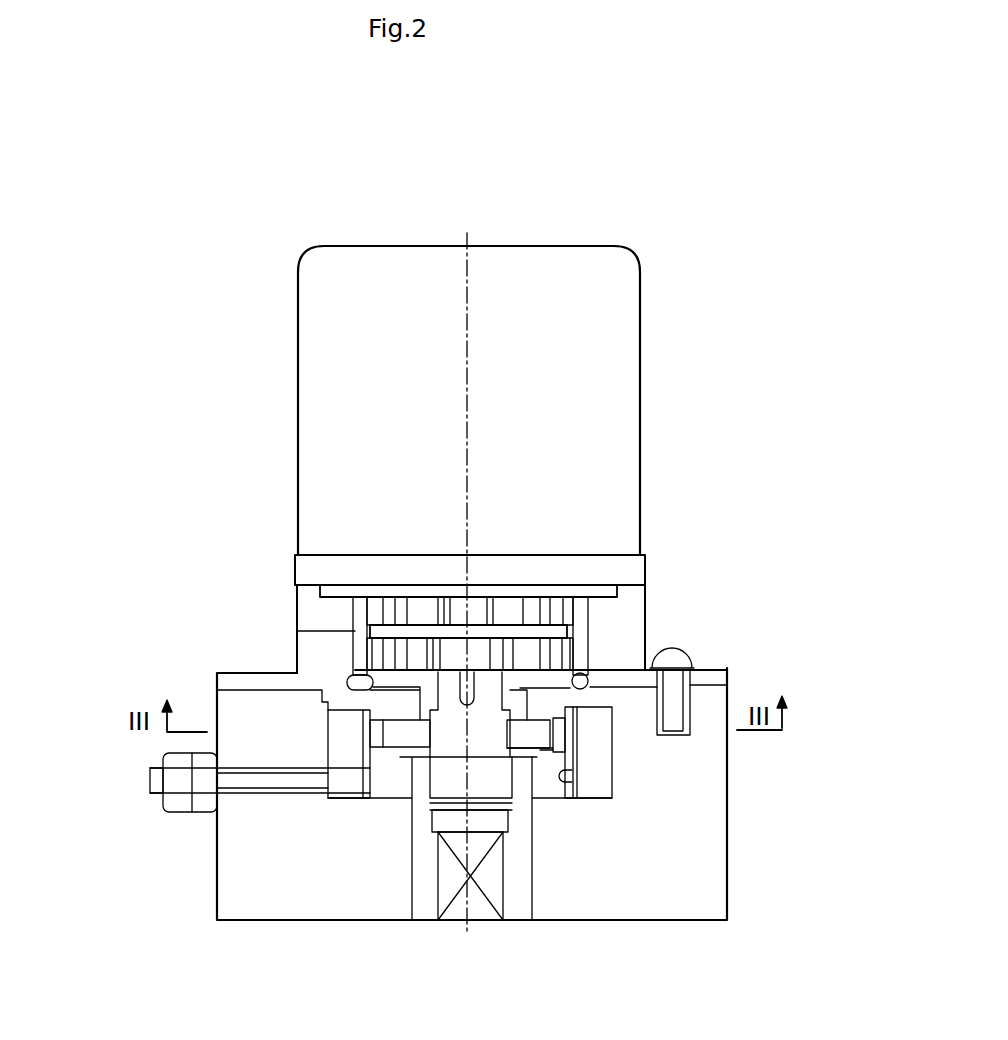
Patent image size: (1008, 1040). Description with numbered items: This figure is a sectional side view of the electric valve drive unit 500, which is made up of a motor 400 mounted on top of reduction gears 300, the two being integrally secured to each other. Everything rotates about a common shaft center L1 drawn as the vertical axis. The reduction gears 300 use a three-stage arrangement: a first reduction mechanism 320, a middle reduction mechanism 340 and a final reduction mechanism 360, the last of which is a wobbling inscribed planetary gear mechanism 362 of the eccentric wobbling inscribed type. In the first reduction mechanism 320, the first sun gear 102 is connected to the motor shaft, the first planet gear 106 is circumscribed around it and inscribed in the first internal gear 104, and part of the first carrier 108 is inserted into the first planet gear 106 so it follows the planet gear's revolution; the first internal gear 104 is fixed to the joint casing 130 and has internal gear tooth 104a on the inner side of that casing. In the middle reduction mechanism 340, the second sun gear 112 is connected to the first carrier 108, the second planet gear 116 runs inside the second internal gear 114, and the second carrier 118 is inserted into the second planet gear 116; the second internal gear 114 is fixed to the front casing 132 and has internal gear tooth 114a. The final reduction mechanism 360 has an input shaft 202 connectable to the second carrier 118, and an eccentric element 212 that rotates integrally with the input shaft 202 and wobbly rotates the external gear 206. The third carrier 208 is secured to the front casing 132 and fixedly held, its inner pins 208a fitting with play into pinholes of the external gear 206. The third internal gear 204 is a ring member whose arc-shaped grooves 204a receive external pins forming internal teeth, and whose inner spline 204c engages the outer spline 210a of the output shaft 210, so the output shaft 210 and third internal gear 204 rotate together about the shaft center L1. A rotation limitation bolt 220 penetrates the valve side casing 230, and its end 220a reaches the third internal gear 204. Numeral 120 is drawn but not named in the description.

The electric valve drive unit 500 is at (620, 183).
The motor 400 is at (184, 248).
The shaft center L1 is at (470, 343).
The reduction gears 300 is at (425, 799).
The first reduction mechanism 320 is at (505, 613).
The middle reduction mechanism 340 is at (782, 630).
The final reduction mechanism 360 is at (785, 688).
The wobbling inscribed planetary gear mechanism 362 is at (785, 920).
The joint casing 130 is at (307, 588).
The first internal gear 104 is at (340, 615).
The internal gear tooth 104a is at (590, 640).
The second sun gear 112 is at (440, 653).
The first sun gear 102 is at (473, 605).
The first carrier 108 is at (500, 632).
The first planet gear 106 is at (570, 587).
The second internal gear 114 is at (335, 630).
The internal gear tooth 114a is at (587, 652).
The second planet gear 116 is at (688, 656).
The bolt 120 is at (677, 705).
The second carrier 118 is at (577, 703).
The front casing 132 is at (218, 672).
The third carrier 208 is at (292, 670).
The inner pins 208a is at (392, 757).
The rotation limitation bolt 220 is at (173, 808).
The end 220a is at (368, 752).
The valve side casing 230 is at (237, 905).
The third internal gear 204 is at (610, 783).
The arc-shaped grooves 204a is at (603, 772).
The inner spline 204c is at (580, 790).
The output shaft 210 is at (515, 900).
The outer spline 210a is at (580, 797).
The external gear 206 is at (540, 800).
The input shaft 202 is at (427, 757).
The eccentric element 212 is at (453, 757).